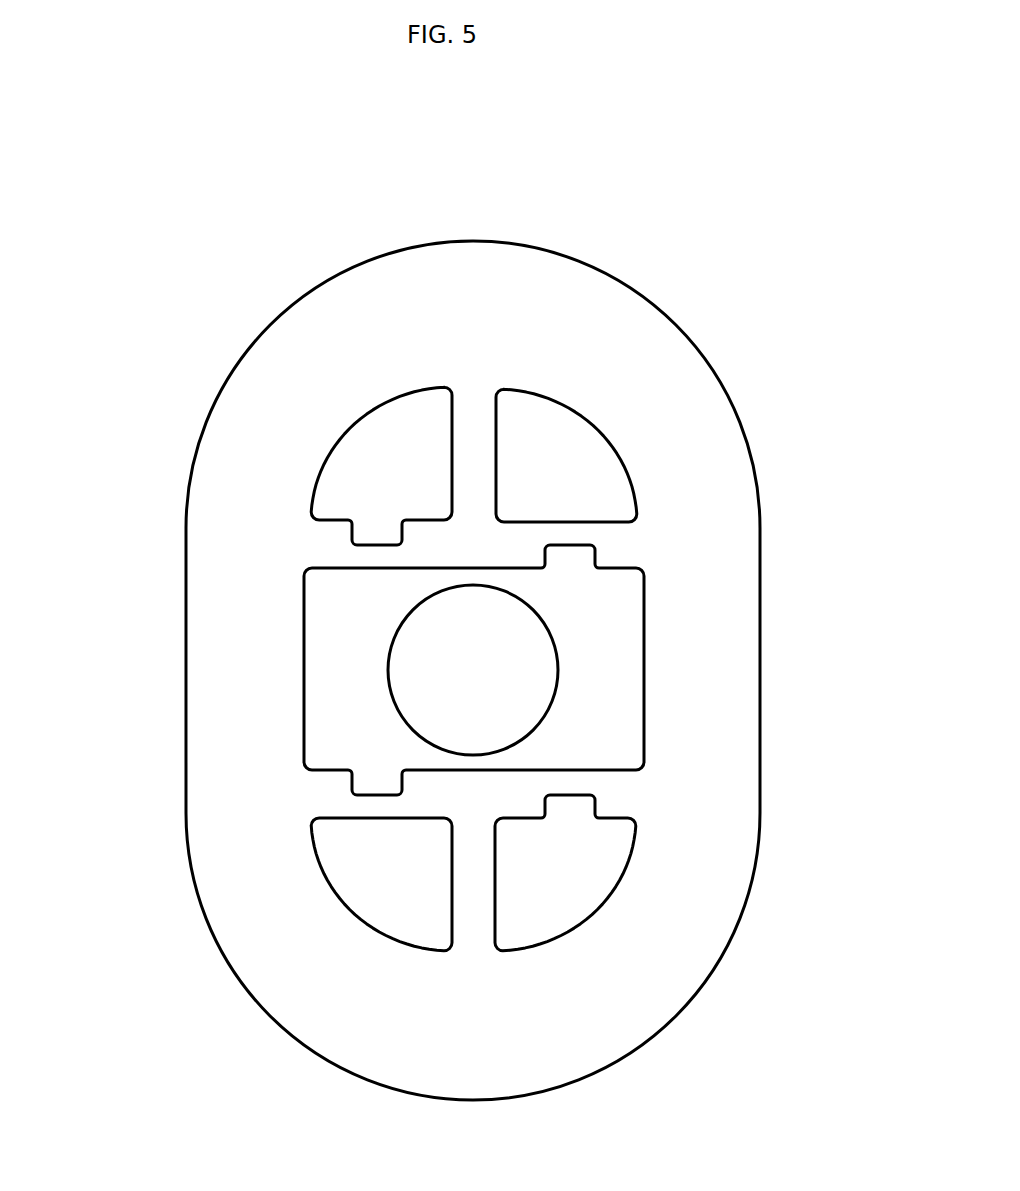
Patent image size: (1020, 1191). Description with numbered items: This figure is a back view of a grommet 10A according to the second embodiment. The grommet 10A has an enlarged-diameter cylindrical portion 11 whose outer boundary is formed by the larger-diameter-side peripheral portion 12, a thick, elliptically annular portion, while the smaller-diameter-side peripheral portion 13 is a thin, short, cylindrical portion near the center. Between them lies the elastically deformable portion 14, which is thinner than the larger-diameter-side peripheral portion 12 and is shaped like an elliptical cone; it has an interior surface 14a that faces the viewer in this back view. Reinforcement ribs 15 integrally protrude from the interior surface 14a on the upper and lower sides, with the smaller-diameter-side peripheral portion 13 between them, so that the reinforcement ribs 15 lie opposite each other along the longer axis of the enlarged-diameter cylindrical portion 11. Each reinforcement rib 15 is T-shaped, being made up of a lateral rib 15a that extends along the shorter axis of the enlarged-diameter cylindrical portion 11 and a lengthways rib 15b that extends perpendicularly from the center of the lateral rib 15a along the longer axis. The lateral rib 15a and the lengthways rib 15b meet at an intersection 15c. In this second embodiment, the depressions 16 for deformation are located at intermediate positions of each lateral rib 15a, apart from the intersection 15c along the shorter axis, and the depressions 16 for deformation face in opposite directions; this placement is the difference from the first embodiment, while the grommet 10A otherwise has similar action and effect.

The grommet 10A is at (775, 680).
The enlarged-diameter cylindrical portion 11 is at (762, 795).
The larger-diameter-side peripheral portion 12 is at (187, 558).
The smaller-diameter-side peripheral portion 13 is at (397, 628).
The elastically deformable portion 14 is at (347, 677).
The interior surface 14a is at (393, 427).
The reinforcement rib 15 is at (498, 458).
The lateral rib 15a is at (575, 545).
The lengthways rib 15b is at (475, 543).
The intersection 15c is at (497, 497).
The depression for deformation 16 is at (373, 543).